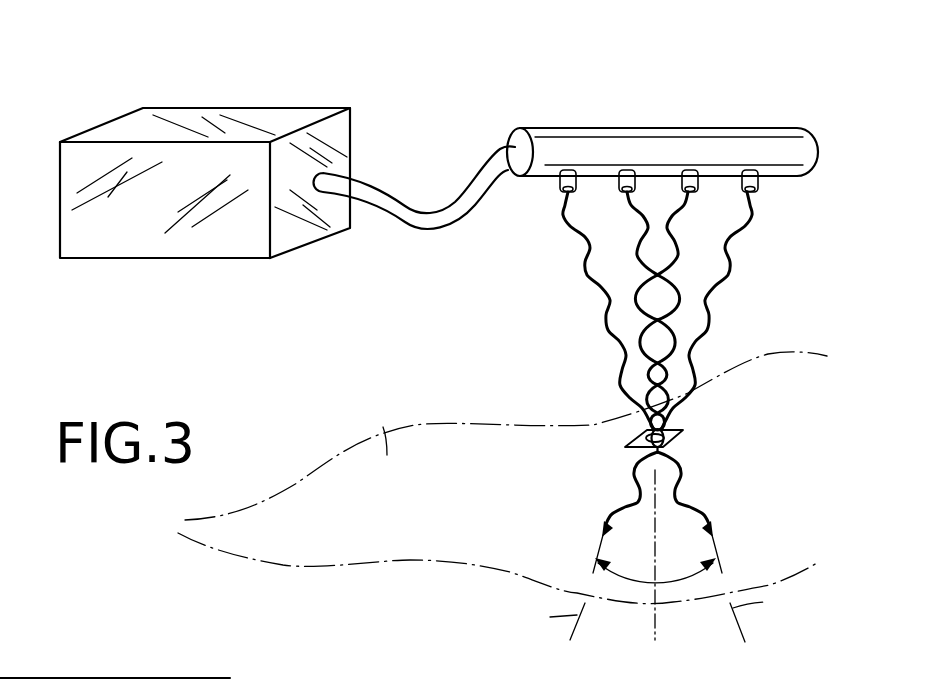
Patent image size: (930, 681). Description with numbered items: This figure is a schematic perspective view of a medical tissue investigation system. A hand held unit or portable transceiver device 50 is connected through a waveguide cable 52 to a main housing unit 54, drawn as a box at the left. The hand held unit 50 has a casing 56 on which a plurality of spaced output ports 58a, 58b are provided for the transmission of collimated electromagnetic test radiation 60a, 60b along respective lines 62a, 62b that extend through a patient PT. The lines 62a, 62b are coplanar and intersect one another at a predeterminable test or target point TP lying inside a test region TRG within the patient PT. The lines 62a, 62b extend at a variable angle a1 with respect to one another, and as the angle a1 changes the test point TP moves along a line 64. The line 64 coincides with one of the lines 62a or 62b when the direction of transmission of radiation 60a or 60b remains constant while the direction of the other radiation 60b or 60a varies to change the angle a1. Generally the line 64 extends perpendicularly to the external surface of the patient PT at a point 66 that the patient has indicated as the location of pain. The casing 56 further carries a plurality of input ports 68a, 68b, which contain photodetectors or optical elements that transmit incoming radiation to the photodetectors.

The hand held unit or portable transceiver device 50 is at (539, 90).
The waveguide cable 52 is at (395, 192).
The main housing unit 54 is at (280, 108).
The casing 56 is at (785, 128).
The output port 58a is at (560, 188).
The output port 58b is at (758, 188).
The collimated electromagnetic test radiation 60a is at (597, 277).
The collimated electromagnetic test radiation 60b is at (717, 277).
The line 62a is at (522, 622).
The line 62b is at (785, 610).
The line 64 is at (606, 632).
The point 66 is at (567, 425).
The input port 68a is at (641, 178).
The input port 68b is at (707, 178).
The patient PT is at (362, 400).
The test or target point TP is at (633, 438).
The test region TRG is at (683, 440).
The variable angle a1 is at (675, 585).